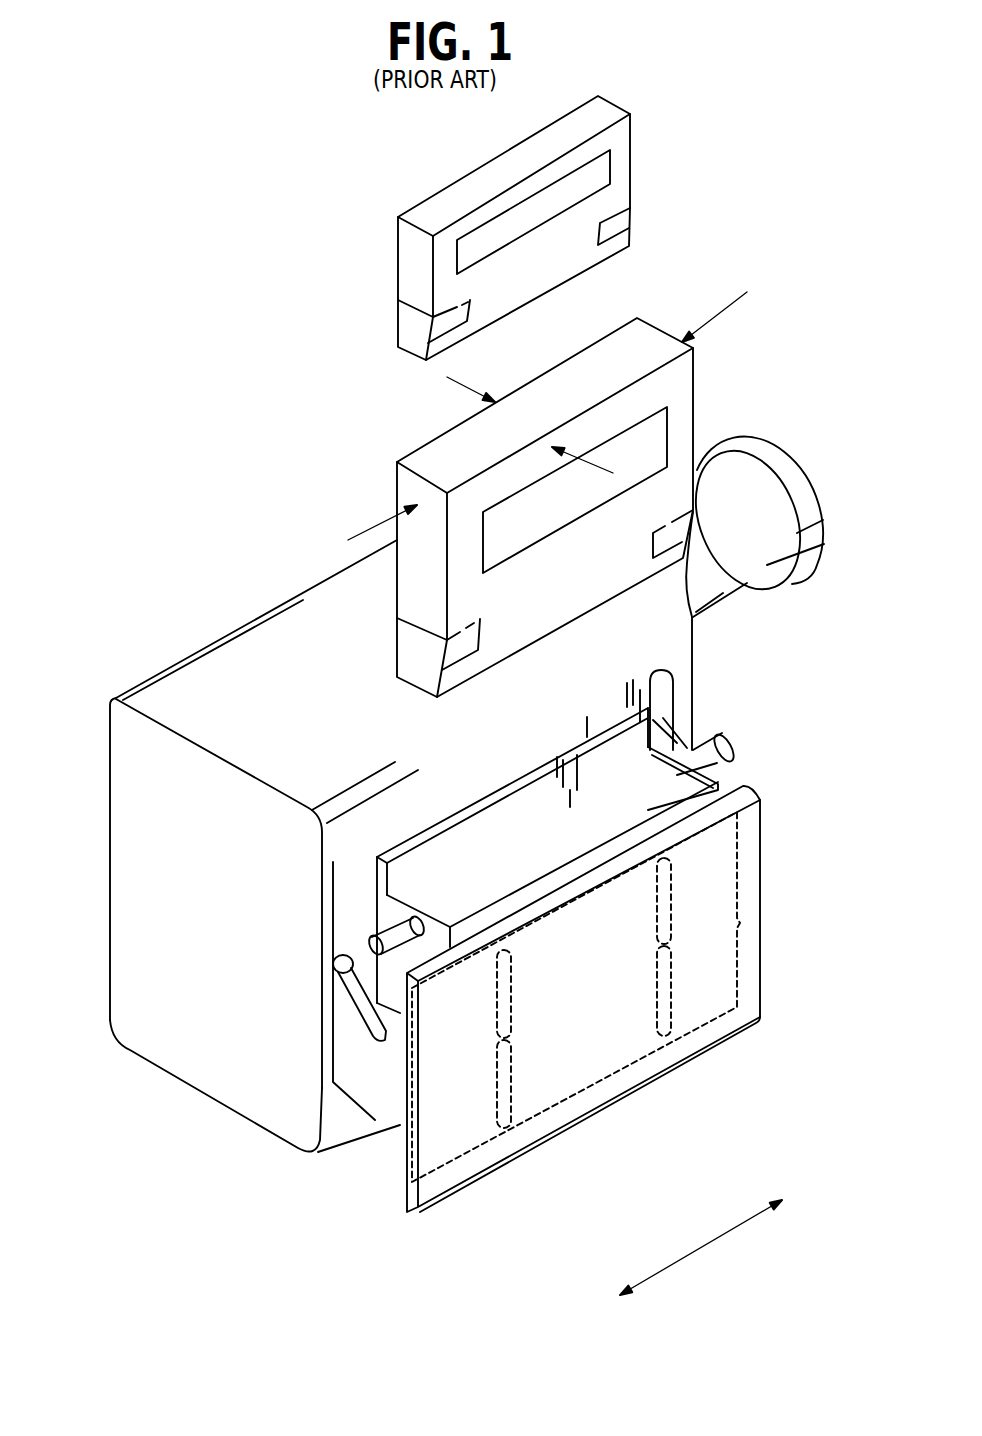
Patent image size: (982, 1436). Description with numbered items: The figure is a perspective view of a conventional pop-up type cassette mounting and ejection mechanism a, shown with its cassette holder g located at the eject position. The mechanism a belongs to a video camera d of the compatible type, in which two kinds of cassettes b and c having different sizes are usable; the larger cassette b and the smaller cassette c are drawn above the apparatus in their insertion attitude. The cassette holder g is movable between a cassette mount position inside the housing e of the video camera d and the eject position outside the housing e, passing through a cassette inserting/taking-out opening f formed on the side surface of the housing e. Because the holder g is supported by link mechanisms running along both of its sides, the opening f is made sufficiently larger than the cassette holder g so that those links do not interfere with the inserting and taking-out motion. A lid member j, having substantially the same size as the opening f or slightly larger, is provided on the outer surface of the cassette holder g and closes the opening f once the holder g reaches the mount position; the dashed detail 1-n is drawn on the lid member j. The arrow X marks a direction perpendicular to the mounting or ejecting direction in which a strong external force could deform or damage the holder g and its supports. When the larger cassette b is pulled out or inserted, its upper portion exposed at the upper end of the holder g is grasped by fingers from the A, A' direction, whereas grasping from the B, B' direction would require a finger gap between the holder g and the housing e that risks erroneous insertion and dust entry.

The cassette mounting and ejection mechanism a is at (308, 1056).
The cassette b is at (695, 363).
The cassette c is at (633, 190).
The video camera d is at (306, 560).
The housing e is at (680, 642).
The cassette inserting/taking-out opening f is at (392, 833).
The cassette holder g is at (492, 833).
The lid member j is at (645, 1068).
The lid slot 1-n is at (738, 923).
The A direction A is at (370, 531).
The A' direction A' is at (728, 307).
The B direction B is at (593, 470).
The B' direction B' is at (458, 384).
The arrow X is at (701, 1247).